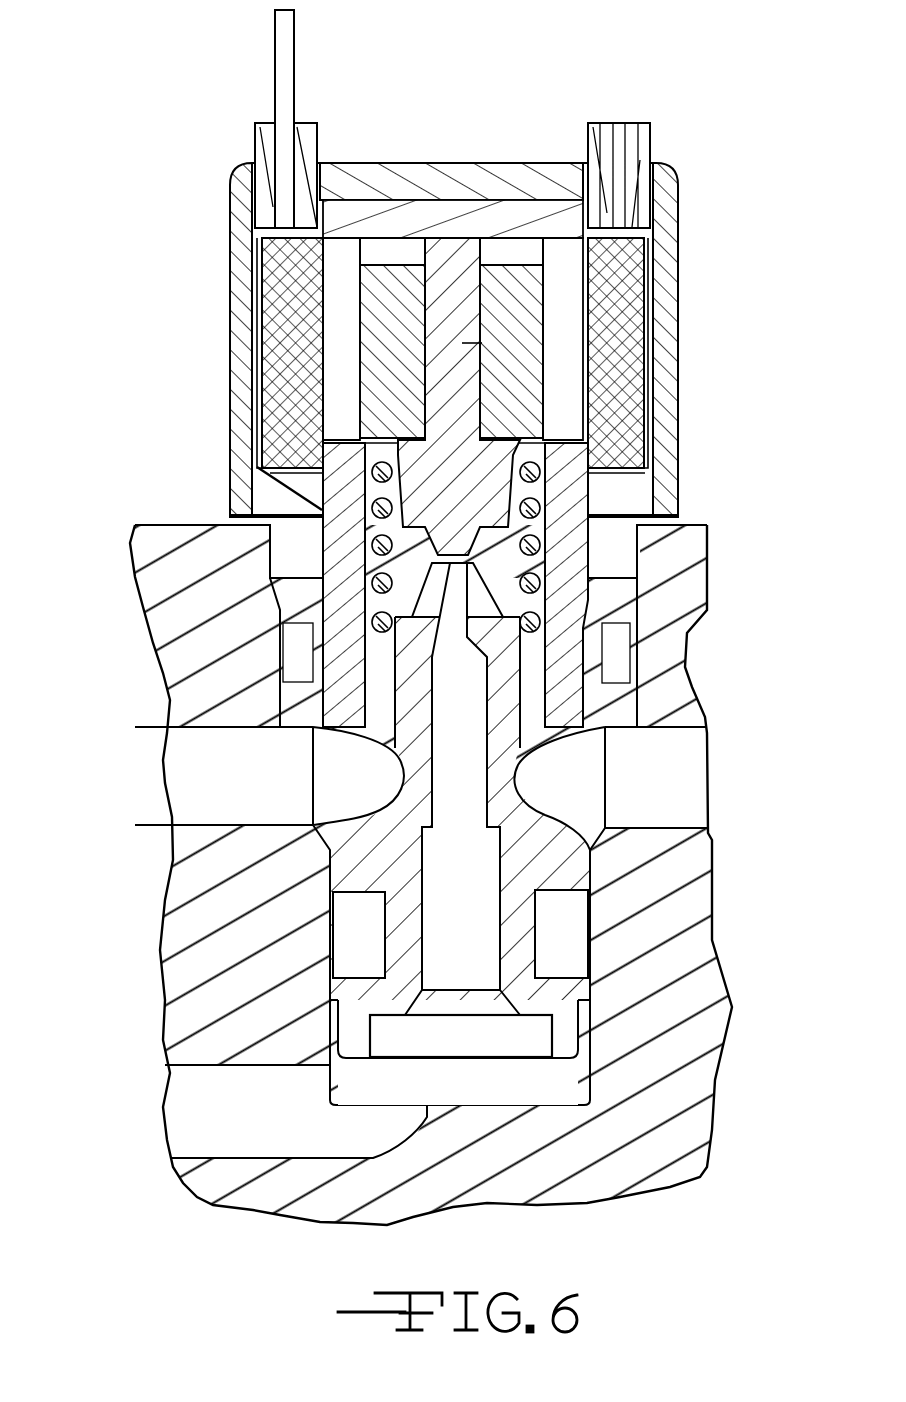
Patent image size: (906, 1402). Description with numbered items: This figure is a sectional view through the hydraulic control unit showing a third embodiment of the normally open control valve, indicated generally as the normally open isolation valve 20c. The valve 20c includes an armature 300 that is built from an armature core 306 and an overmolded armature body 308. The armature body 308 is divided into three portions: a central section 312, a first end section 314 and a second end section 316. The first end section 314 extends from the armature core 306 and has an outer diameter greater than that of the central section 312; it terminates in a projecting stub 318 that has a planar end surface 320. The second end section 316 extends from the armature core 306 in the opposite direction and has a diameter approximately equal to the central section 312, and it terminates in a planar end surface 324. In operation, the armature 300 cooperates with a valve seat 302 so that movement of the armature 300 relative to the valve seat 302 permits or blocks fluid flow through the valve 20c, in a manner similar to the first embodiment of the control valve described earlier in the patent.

The normally open isolation valve 20c is at (193, 248).
The armature 300 is at (551, 311).
The valve seat 302 is at (320, 868).
The armature core 306 is at (363, 382).
The armature body 308 is at (423, 301).
The central section 312 is at (477, 343).
The first end section 314 is at (440, 490).
The second end section 316 is at (405, 242).
The projecting stub 318 is at (508, 640).
The planar end surface 320 is at (443, 875).
The planar end surface 324 is at (458, 240).